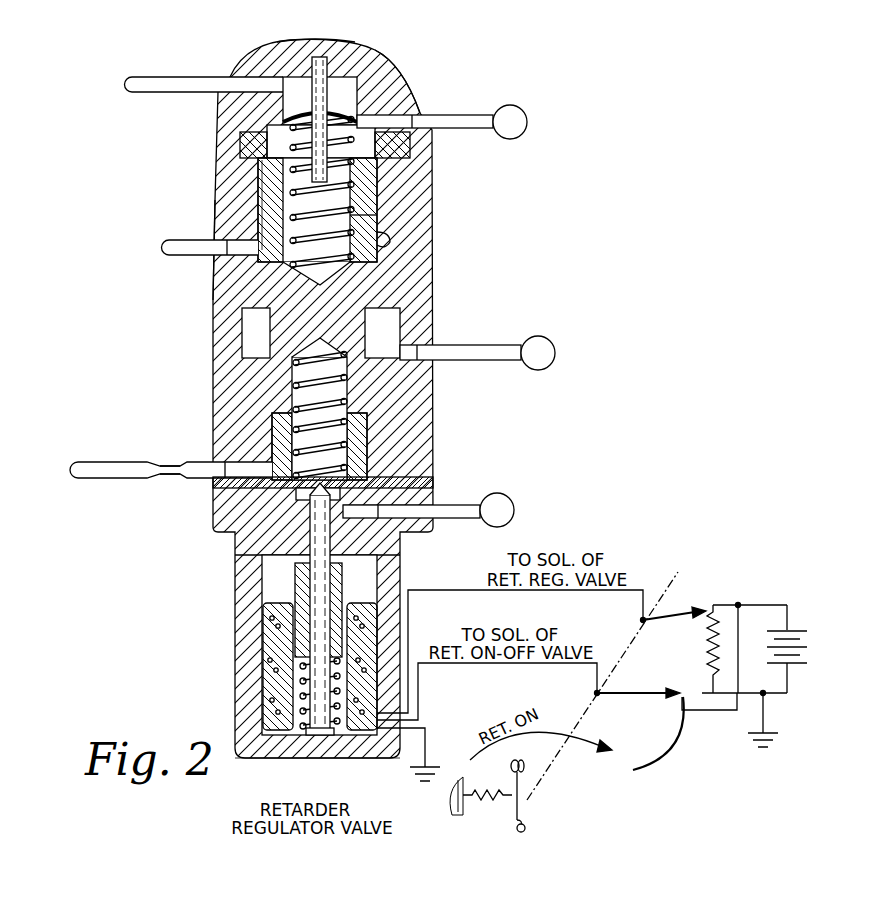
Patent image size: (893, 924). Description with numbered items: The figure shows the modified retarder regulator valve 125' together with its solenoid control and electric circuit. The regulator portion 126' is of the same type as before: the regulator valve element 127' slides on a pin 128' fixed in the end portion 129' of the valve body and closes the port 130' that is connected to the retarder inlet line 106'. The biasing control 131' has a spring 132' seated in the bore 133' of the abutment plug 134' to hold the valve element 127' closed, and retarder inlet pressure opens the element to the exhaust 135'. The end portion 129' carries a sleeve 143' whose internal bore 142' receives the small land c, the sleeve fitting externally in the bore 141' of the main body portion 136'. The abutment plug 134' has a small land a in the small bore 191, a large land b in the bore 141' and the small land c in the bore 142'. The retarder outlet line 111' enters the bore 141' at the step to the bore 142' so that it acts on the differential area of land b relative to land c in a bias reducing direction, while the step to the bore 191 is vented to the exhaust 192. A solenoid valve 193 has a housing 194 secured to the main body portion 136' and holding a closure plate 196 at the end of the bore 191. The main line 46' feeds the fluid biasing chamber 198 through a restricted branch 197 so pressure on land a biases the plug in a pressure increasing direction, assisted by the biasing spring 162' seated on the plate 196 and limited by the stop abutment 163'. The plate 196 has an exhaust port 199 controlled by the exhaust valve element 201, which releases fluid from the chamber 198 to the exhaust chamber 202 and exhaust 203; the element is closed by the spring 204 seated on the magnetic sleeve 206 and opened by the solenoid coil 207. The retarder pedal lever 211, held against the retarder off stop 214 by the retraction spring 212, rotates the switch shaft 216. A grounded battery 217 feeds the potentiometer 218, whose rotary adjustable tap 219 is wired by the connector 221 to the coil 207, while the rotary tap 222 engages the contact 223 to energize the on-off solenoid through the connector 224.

The retarder inlet line 106' is at (185, 59).
The pin 128' is at (280, 101).
The end portion of the valve body 129' is at (342, 36).
The port 130' is at (397, 77).
The regulator valve element 127' is at (373, 99).
The exhaust 135' is at (473, 105).
The regulator portion 126' is at (247, 117).
The sleeve 143' is at (207, 144).
The stop abutment 163' is at (429, 150).
The internal bore 142' is at (263, 221).
The spring 132' is at (382, 192).
The small land c is at (263, 227).
The bore of abutment plug 133' is at (416, 225).
The retarder outlet line 111' is at (180, 263).
The abutment plug 134' is at (437, 249).
The large land b is at (250, 278).
The biasing spring 162' is at (320, 388).
The bore of the main body portion 141' is at (278, 333).
The small land a is at (278, 347).
The main body portion 136' is at (171, 294).
The biasing control 131' is at (280, 398).
The main line 46' is at (144, 450).
The small bore 191 is at (275, 450).
The fluid biasing chamber 198 is at (360, 423).
The exhaust port 199 is at (310, 468).
The exhaust 192 is at (553, 345).
The restricted branch 197 is at (182, 472).
The closure plate 196 is at (270, 483).
The exhaust chamber 202 is at (400, 488).
The exhaust 203 is at (505, 495).
The exhaust valve element 201 is at (367, 543).
The housing 194 is at (240, 560).
The solenoid valve 193 is at (225, 577).
The magnetic sleeve 206 is at (302, 587).
The modified retarder regulator valve 125' is at (251, 686).
The solenoid winding or coil 207 is at (275, 657).
The spring 204 is at (333, 733).
The connector 221 is at (500, 592).
The connector 224 is at (500, 663).
The switch shaft 216 is at (583, 712).
The rotary tap 222 is at (620, 697).
The rotary adjustable tap 219 is at (682, 612).
The potentiometer 218 is at (710, 647).
The battery 217 is at (792, 670).
The contact 223 is at (655, 757).
The retarder pedal lever 211 is at (520, 778).
The retraction spring 212 is at (497, 800).
The retarder off stop 214 is at (528, 827).